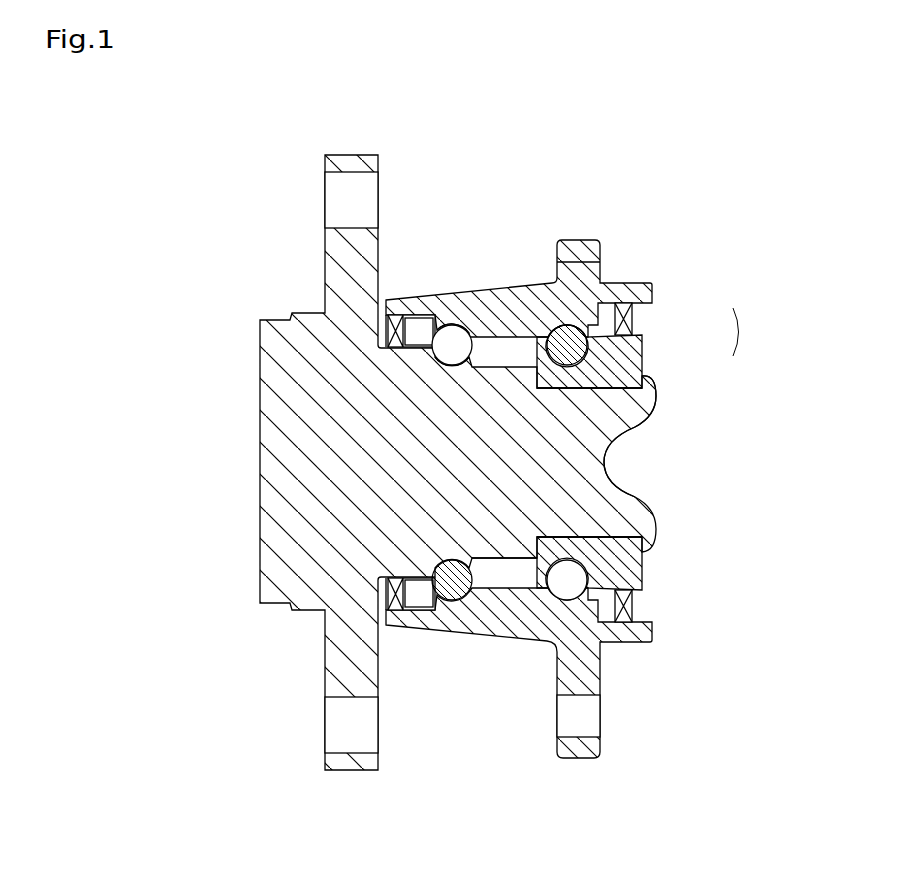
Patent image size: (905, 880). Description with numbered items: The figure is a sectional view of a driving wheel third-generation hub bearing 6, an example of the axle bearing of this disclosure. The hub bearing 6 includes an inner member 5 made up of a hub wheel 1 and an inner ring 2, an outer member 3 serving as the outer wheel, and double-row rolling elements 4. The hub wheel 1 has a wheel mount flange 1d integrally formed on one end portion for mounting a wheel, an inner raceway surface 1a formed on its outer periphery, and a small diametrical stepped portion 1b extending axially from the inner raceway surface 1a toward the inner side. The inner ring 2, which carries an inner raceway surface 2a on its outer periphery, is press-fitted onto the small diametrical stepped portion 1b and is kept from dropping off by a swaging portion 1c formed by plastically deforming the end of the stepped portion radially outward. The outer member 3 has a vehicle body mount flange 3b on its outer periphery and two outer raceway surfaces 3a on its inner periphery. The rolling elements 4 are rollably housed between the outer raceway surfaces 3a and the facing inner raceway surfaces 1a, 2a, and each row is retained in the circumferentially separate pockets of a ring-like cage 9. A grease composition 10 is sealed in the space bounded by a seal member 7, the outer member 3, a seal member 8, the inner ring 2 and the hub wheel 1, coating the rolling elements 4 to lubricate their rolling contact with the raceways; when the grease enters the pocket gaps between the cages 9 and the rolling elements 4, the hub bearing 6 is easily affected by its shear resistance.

The hub wheel 1 is at (460, 455).
The inner raceway surface 1a is at (440, 356).
The small diametrical stepped portion 1b is at (600, 383).
The swaging portion 1c is at (655, 378).
The wheel mount flange 1d is at (325, 160).
The inner ring 2 is at (638, 340).
The inner raceway surface 2a is at (612, 446).
The outer member 3 is at (566, 449).
The outer raceway surfaces 3a is at (550, 335).
The vehicle body mount flange 3b is at (585, 750).
The double-row rolling elements 4 is at (566, 468).
The inner member 5 is at (734, 337).
The hub bearing 6 is at (624, 270).
The seal member 7 is at (418, 316).
The seal member 8 is at (633, 320).
The cages 9 is at (480, 585).
The grease composition 10 is at (504, 575).